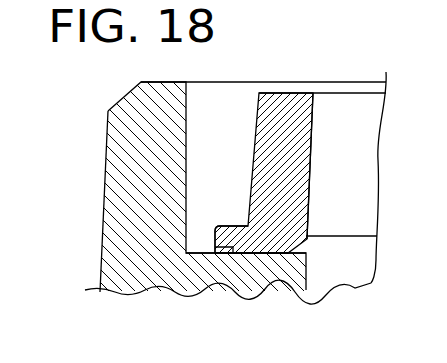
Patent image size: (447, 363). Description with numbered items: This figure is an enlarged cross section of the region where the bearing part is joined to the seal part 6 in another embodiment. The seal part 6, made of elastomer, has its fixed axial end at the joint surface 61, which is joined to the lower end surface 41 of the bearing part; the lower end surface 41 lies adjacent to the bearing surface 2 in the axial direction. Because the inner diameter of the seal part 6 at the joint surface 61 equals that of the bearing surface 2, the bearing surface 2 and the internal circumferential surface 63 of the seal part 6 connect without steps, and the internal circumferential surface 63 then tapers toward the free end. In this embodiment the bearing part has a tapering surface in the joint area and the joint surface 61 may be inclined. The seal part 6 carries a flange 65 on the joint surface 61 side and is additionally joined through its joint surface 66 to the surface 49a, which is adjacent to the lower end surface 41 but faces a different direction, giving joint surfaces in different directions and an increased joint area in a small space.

The bearing surface 2 is at (302, 280).
The seal part 6 is at (282, 110).
The lower end surface 41 is at (299, 242).
The surface adjacent to the lower end surface 49a is at (257, 257).
The joint surface 61 is at (290, 247).
The internal circumferential surface 63 is at (307, 172).
The flange 65 is at (230, 238).
The joint surface 66 is at (233, 246).